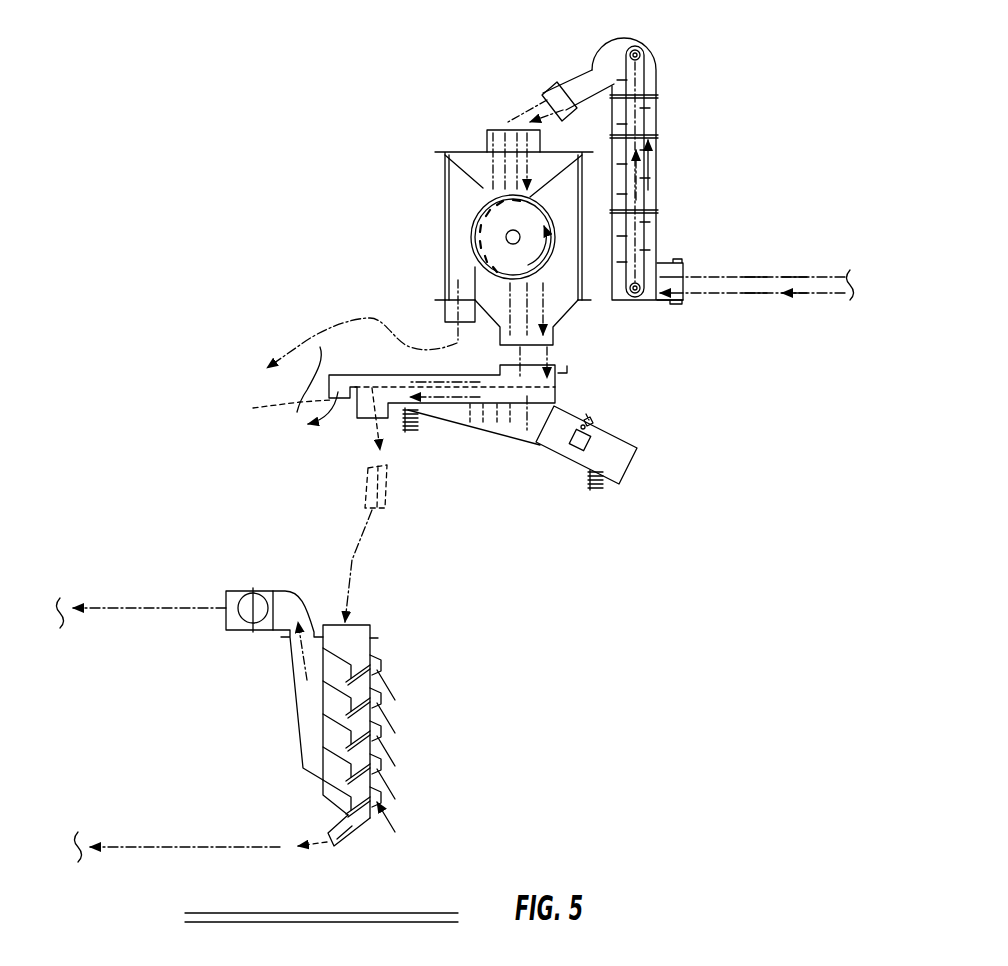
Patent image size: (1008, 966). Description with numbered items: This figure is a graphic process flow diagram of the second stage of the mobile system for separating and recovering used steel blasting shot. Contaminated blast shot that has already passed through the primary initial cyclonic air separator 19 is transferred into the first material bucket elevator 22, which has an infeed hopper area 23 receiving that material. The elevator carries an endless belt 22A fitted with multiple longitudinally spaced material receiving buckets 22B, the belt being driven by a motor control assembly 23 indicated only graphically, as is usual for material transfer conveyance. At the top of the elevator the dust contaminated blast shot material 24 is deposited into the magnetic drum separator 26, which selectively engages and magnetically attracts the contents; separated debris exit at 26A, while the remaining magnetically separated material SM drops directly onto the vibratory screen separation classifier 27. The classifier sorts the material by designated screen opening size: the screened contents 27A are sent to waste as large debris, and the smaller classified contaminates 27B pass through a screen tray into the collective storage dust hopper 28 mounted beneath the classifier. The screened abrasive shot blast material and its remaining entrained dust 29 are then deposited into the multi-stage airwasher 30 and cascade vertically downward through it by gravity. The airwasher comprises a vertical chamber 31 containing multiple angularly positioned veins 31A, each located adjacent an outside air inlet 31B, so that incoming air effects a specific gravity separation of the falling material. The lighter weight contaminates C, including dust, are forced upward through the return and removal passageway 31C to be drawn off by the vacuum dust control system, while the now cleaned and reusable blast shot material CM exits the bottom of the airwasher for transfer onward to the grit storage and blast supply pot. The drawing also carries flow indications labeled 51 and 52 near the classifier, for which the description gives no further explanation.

The primary initial cyclonic air separator 19 is at (776, 301).
The first material bucket elevator 22 is at (658, 117).
The endless belt 22A is at (647, 193).
The material receiving buckets 22B is at (655, 243).
The infeed hopper area / motor control assembly 23 is at (641, 53).
The dust contaminated blast shot material 24 is at (547, 86).
The magnetic drum separator 26 is at (417, 217).
The separated debris exit 26A is at (443, 327).
The vibratory screen separation classifier 27 is at (575, 387).
The screened contents 27A is at (273, 385).
The smaller classified contaminates 27B is at (528, 404).
The collective storage dust hopper 28 is at (623, 455).
The screened abrasive shot blast material and entrained contaminants 29 is at (373, 475).
The multi-stage airwasher 30 is at (407, 638).
The vertical chamber 31 is at (378, 668).
The angularly positioned veins 31A is at (327, 690).
The outside air inlet 31B is at (327, 717).
The return and removal passageway 31C is at (227, 620).
The return path arrow 51 is at (357, 417).
The leveling tray 52 is at (460, 405).
The magnetically separated material SM is at (548, 352).
The lighter weight contaminates C is at (297, 658).
The cleaned and reusable blast shot material CM is at (262, 845).